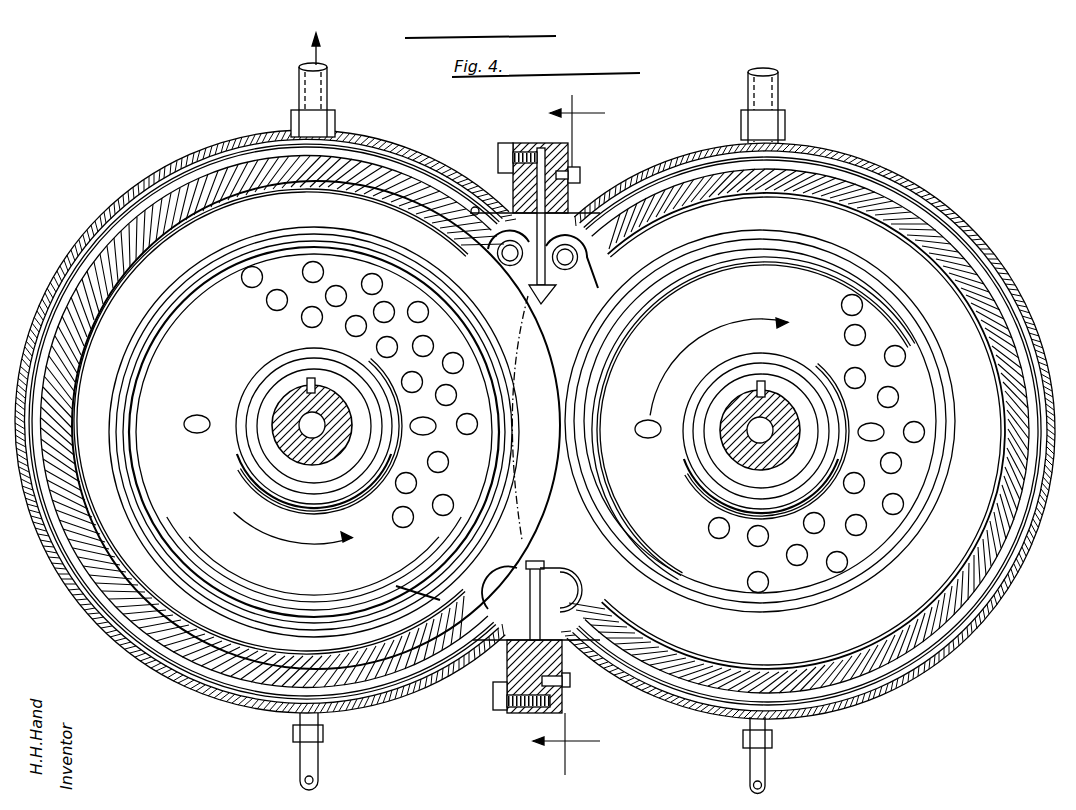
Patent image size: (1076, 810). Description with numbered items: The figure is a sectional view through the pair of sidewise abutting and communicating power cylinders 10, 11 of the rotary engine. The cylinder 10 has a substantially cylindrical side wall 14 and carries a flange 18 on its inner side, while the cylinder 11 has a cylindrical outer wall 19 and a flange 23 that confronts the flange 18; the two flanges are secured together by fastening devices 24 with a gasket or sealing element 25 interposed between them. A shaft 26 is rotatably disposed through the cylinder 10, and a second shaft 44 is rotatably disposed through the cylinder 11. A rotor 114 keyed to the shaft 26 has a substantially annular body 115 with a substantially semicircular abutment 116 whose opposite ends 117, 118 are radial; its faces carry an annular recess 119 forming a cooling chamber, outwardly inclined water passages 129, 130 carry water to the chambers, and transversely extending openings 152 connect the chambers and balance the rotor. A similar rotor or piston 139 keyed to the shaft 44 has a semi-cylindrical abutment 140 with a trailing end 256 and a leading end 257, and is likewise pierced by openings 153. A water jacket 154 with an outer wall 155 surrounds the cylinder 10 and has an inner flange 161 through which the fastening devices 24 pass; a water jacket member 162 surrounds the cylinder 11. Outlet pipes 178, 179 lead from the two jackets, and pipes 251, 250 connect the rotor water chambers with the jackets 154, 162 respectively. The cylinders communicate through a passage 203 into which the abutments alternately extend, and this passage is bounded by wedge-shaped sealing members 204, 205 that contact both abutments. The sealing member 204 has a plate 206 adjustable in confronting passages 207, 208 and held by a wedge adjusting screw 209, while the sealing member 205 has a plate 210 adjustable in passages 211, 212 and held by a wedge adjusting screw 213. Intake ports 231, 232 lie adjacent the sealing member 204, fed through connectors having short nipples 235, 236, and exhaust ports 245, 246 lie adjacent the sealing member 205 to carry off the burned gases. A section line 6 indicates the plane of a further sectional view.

The section line 6- 6 is at (577, 435).
The power cylinder 10 is at (413, 675).
The power cylinder 11 is at (897, 649).
The cylindrical side wall 14 is at (242, 677).
The flange 18 is at (522, 662).
The cylindrical outer wall 19 is at (994, 557).
The flange 23 is at (563, 706).
The fastening devices 24 is at (500, 704).
The gasket or sealing element 25 is at (532, 715).
The shaft 26 is at (297, 462).
The second shaft 44 is at (779, 390).
The rotor 114 is at (213, 600).
The annular body 115 is at (484, 492).
The abutment 116 is at (433, 620).
The end of abutment 117 is at (403, 598).
The end of abutment 118 is at (209, 250).
The annular recess 119 is at (158, 481).
The water passage 129 is at (205, 402).
The water passage 130 is at (430, 433).
The rotor or piston 139 is at (982, 524).
The abutment 140 is at (953, 568).
The transversely extending openings 152 is at (424, 484).
The transversely extending openings 153 is at (858, 524).
The water jacket 154 is at (120, 655).
The outer wall 155 is at (195, 690).
The flange 161 is at (510, 715).
The water jacket member 162 is at (951, 653).
The outlet pipe 178 is at (298, 96).
The outlet pipe 179 is at (780, 93).
The communicating passage 203 is at (530, 560).
The wedge-shaped sealing member 204 is at (532, 302).
The wedge-shaped sealing member 205 is at (529, 500).
The plate 206 is at (505, 276).
The passage 207 is at (522, 286).
The passage 208 is at (566, 286).
The wedge adjusting screw 209 is at (443, 209).
The plate 210 is at (562, 586).
The passage 211 is at (496, 590).
The passage 212 is at (556, 598).
The wedge adjusting screw 213 is at (628, 615).
The intake port 231 is at (497, 252).
The intake port 232 is at (582, 262).
The nipple 235 is at (472, 240).
The nipple 236 is at (622, 300).
The exhaust port 245 is at (513, 578).
The exhaust port 246 is at (592, 603).
The connecting pipe 250 is at (751, 761).
The pipe 251 is at (319, 758).
The trailing end 256 is at (858, 258).
The leading end 257 is at (640, 630).